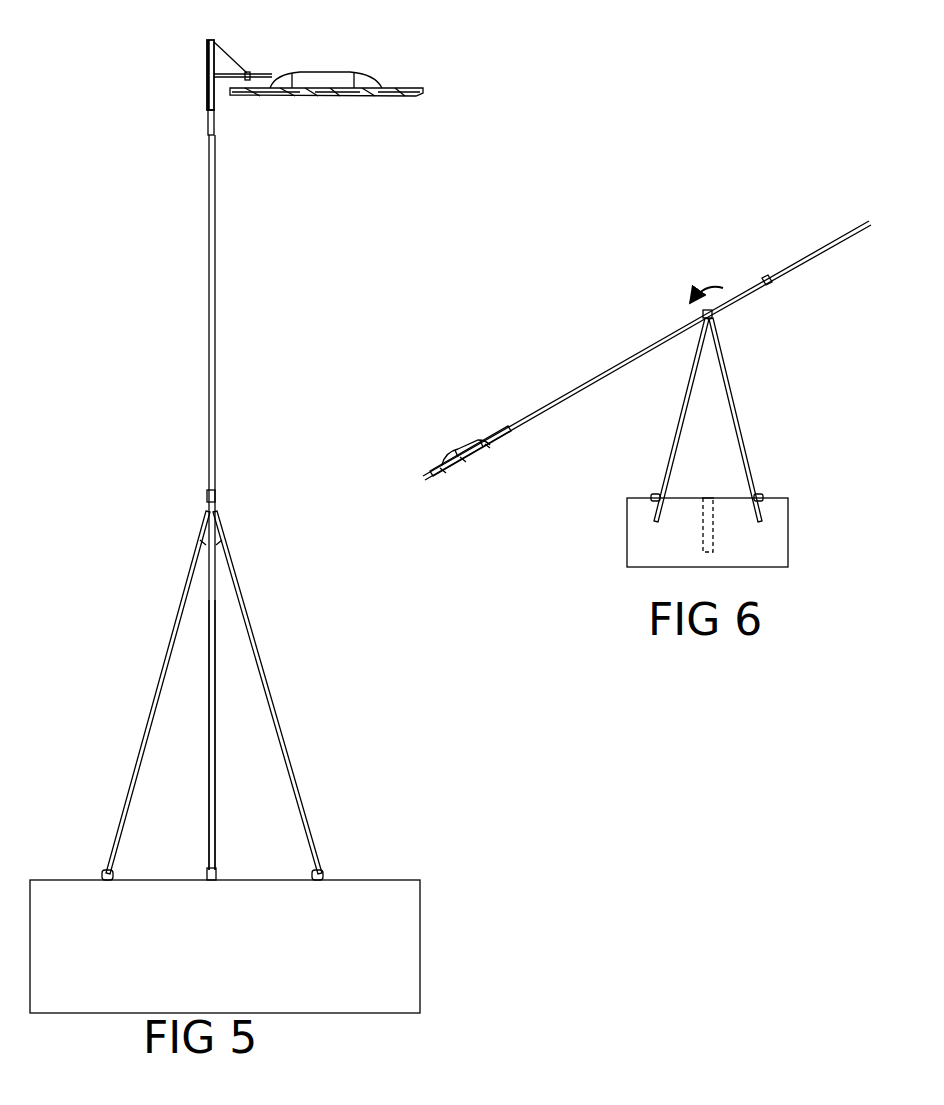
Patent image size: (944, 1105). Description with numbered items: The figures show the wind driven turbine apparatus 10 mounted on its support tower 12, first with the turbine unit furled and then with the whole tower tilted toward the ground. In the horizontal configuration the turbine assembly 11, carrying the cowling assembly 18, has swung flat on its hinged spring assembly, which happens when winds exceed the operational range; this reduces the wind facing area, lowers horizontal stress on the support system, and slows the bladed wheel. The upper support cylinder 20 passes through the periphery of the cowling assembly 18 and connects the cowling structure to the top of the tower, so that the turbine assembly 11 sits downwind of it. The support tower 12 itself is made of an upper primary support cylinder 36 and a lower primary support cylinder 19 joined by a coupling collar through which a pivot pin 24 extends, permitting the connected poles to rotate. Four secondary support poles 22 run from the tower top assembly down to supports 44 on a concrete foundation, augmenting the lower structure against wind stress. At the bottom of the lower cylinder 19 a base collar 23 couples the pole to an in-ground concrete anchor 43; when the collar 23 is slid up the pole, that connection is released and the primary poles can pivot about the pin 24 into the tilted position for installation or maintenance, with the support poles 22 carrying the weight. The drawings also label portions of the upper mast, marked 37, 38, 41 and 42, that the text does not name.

In FIG. 5, the wind driven turbine apparatus 10 is at (176, 252).
In FIG. 5, the turbine assembly 11 is at (364, 58).
In FIG. 6, the turbine assembly 11 is at (473, 467).
In FIG. 5, the support tower 12 is at (235, 497).
In FIG. 5, the cowling assembly 18 is at (345, 58).
In FIG. 5, the lower primary support cylinder 19 is at (208, 790).
In FIG. 6, the lower primary support cylinder 19 is at (813, 257).
In FIG. 5, the upper support cylinder 20 is at (265, 73).
In FIG. 6, the support legs 22 is at (670, 433).
In FIG. 5, the base collar 23 is at (217, 868).
In FIG. 6, the base collar 23 is at (765, 280).
In FIG. 6, the pivot pin 24 is at (712, 315).
In FIG. 5, the upper primary support cylinder 36 is at (216, 320).
In FIG. 6, the upper primary support cylinder 36 is at (592, 373).
In FIG. 5, the mast coupling 37 is at (208, 127).
In FIG. 5, the upper mast section 38 is at (215, 102).
In FIG. 5, the cross arm 41 is at (210, 78).
In FIG. 5, the brace 42 is at (230, 57).
In FIG. 5, the concrete anchor 43 is at (210, 883).
In FIG. 6, the concrete anchor 43 is at (705, 500).
In FIG. 5, the supports 44 is at (102, 873).
In FIG. 6, the supports 44 is at (655, 495).